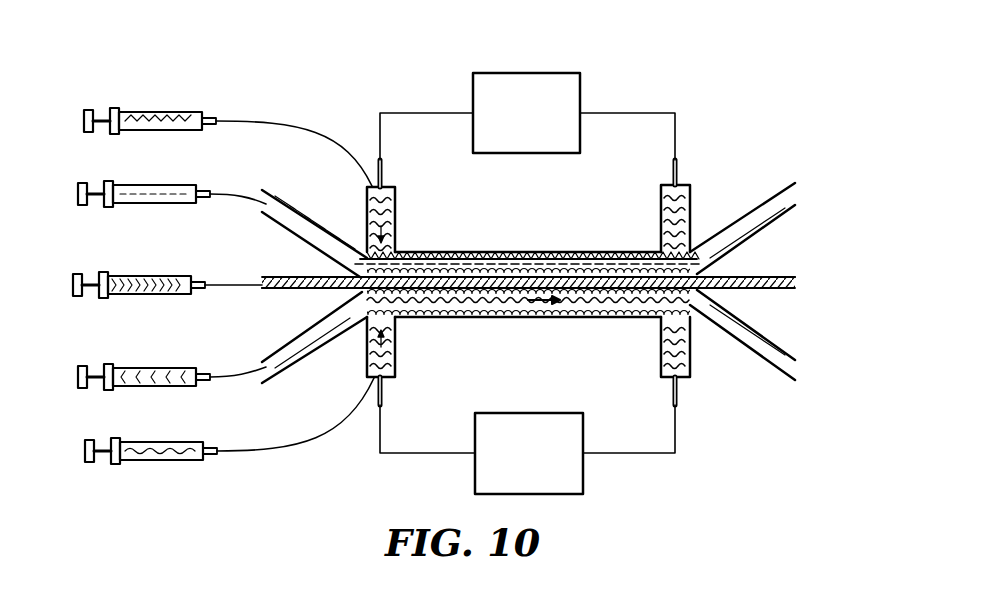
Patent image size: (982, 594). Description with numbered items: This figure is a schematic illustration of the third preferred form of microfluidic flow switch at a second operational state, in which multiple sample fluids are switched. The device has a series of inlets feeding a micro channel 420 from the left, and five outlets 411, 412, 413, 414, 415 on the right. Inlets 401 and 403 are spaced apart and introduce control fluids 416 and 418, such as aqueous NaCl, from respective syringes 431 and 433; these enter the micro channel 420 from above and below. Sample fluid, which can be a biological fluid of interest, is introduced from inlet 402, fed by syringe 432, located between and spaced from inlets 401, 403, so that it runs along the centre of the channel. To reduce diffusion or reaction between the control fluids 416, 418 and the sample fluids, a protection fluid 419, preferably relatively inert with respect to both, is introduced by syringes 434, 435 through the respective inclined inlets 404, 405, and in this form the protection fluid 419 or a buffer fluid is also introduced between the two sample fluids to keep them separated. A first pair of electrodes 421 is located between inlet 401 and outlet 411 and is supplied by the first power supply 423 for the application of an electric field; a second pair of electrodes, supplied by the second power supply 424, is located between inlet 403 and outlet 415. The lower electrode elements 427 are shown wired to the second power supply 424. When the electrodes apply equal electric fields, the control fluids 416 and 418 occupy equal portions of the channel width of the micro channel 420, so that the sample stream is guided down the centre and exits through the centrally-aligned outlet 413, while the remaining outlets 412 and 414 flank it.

The inlet 401 is at (367, 200).
The inlet 402 is at (280, 282).
The inlet 403 is at (367, 372).
The inlet 404 is at (266, 190).
The inlet 405 is at (266, 362).
The outlet 411 is at (692, 190).
The outlet 412 is at (770, 220).
The outlet 413 is at (775, 290).
The outlet 414 is at (775, 368).
The outlet 415 is at (692, 376).
The control fluid 416 is at (556, 250).
The control fluid 418 is at (605, 300).
The protection fluid 419 is at (499, 262).
The micro channel 420 is at (521, 238).
The first pair of electrodes 421 is at (385, 168).
The first power supply 423 is at (581, 95).
The second power supply 424 is at (584, 470).
The lower electrodes 427 is at (386, 392).
The syringe 431 is at (160, 108).
The syringe 432 is at (146, 277).
The syringe 433 is at (160, 463).
The syringe 434 is at (150, 185).
The syringe 435 is at (148, 367).